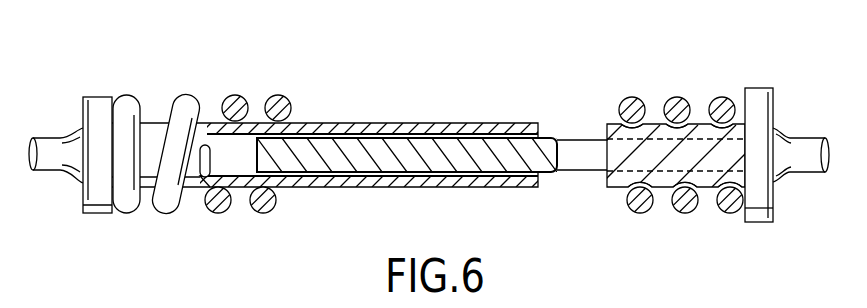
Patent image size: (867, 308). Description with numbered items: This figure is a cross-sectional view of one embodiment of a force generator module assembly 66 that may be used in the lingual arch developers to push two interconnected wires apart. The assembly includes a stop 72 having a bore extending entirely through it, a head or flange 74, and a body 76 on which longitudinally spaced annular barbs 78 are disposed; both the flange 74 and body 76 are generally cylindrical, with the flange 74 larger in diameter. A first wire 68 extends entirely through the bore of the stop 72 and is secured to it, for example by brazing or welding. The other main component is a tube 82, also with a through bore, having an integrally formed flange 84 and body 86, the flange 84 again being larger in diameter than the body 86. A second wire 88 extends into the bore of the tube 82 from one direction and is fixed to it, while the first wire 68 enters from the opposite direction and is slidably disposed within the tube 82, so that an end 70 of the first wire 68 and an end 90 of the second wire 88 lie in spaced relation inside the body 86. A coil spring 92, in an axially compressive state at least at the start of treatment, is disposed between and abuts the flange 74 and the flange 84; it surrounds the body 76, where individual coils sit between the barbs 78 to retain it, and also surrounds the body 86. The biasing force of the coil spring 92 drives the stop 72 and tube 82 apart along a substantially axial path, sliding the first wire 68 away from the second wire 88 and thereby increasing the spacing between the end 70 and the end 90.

The force generator module assembly 66 is at (470, 95).
The first wire 68 is at (812, 166).
The end of the first wire 70 is at (258, 160).
The stop 72 is at (760, 91).
The flange of the stop 74 is at (762, 113).
The body of the stop 76 is at (617, 188).
The barbs 78 is at (703, 118).
The tube 82 is at (113, 94).
The flange of the tube 84 is at (95, 127).
The body of the tube 86 is at (334, 121).
The second wire 88 is at (55, 173).
The end of the second wire 90 is at (208, 152).
The coil spring 92 is at (240, 104).